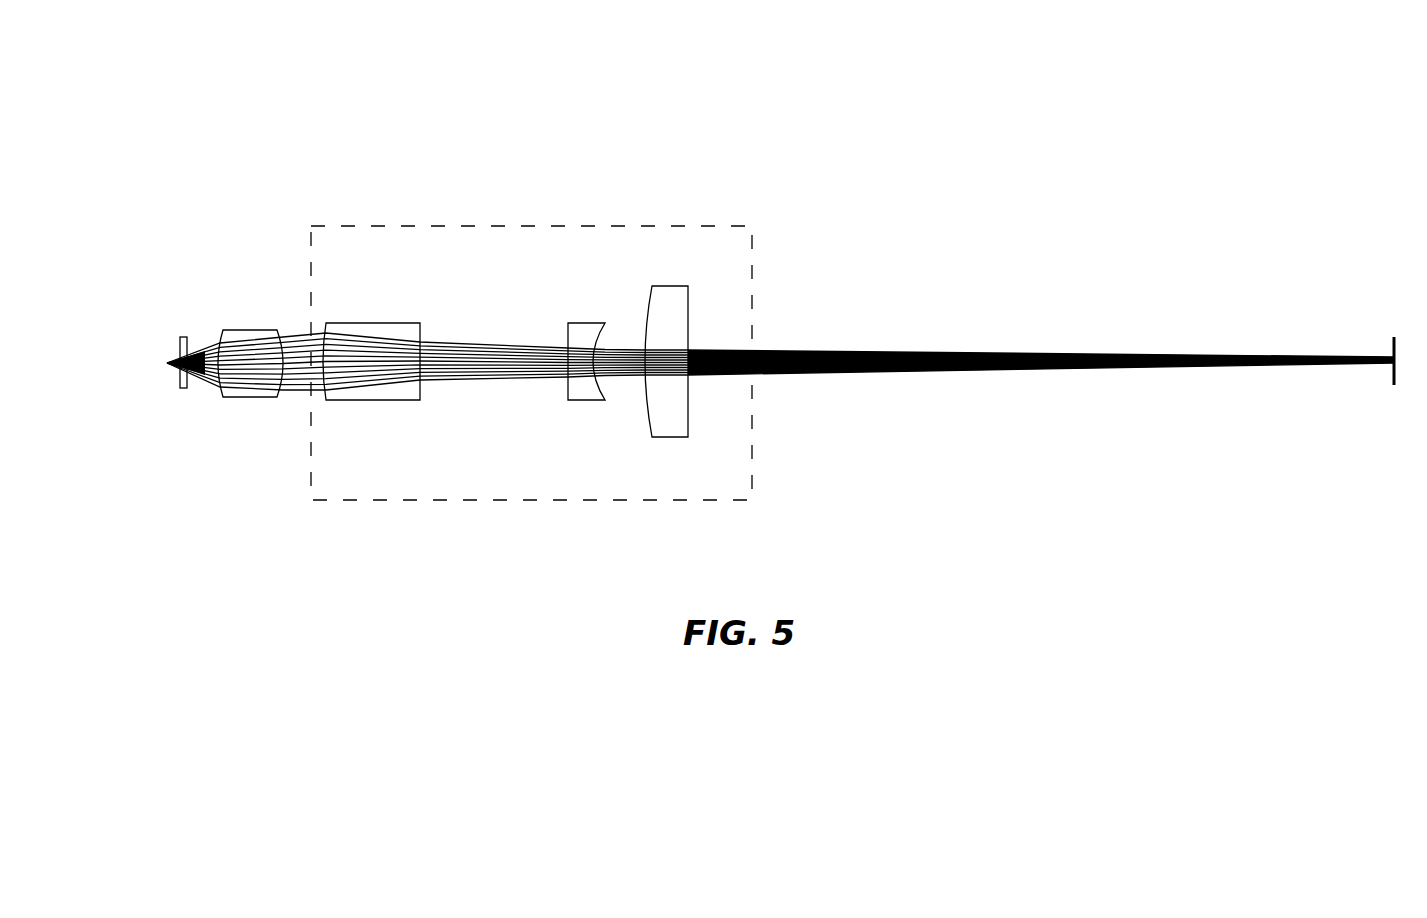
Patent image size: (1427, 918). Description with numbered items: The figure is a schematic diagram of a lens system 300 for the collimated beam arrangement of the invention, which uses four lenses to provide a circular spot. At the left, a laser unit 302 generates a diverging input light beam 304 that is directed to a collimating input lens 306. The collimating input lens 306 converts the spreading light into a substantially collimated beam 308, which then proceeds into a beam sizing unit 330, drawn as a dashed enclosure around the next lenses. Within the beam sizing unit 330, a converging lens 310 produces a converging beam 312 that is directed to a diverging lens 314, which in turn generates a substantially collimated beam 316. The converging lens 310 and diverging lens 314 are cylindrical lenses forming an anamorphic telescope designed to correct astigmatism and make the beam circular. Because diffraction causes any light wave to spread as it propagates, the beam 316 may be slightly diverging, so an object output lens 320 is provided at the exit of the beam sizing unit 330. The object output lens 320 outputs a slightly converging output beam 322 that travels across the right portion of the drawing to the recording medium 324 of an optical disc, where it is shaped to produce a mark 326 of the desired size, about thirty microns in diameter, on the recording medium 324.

The lens system 300 is at (430, 82).
The laser unit 302 is at (178, 386).
The diverging input light beam 304 is at (200, 350).
The collimating input lens 306 is at (240, 400).
The substantially collimated beam 308 is at (295, 333).
The converging lens 310 is at (402, 402).
The converging beam 312 is at (463, 345).
The diverging lens 314 is at (583, 402).
The substantially collimated beam 316 is at (620, 352).
The object output lens 320 is at (667, 438).
The output beam 322 is at (960, 354).
The recording medium 324 is at (1392, 387).
The mark 326 is at (1386, 336).
The beam sizing unit 330 is at (515, 226).